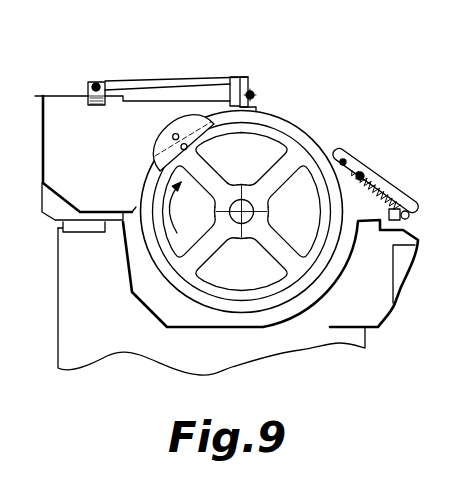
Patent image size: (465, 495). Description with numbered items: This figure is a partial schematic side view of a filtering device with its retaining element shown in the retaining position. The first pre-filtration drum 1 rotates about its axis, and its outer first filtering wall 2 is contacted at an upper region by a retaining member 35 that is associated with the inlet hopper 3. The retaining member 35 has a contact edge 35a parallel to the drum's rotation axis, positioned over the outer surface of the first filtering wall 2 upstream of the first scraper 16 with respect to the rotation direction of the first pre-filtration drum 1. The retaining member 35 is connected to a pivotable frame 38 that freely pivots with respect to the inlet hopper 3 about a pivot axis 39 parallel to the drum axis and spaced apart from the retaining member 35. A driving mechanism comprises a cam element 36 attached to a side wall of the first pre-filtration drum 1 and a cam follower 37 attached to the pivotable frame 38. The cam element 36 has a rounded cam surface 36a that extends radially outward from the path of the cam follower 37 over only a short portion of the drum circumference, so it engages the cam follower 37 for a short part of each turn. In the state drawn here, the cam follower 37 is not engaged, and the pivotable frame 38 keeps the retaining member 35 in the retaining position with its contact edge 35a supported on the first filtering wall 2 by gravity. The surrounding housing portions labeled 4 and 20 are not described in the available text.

The first pre-filtration drum 1 is at (163, 292).
The first filtering wall 2 is at (304, 125).
The inlet hopper 3 is at (72, 96).
The housing guide wall 4 is at (269, 318).
The first scraper 16 is at (334, 148).
The support block 20 is at (403, 272).
The retaining member 35 is at (254, 93).
The contact edge 35a is at (253, 110).
The cam element 36 is at (206, 138).
The rounded cam surface 36a is at (156, 143).
The cam follower 37 is at (229, 96).
The pivotable frame 38 is at (160, 80).
The pivot axis 39 is at (96, 83).